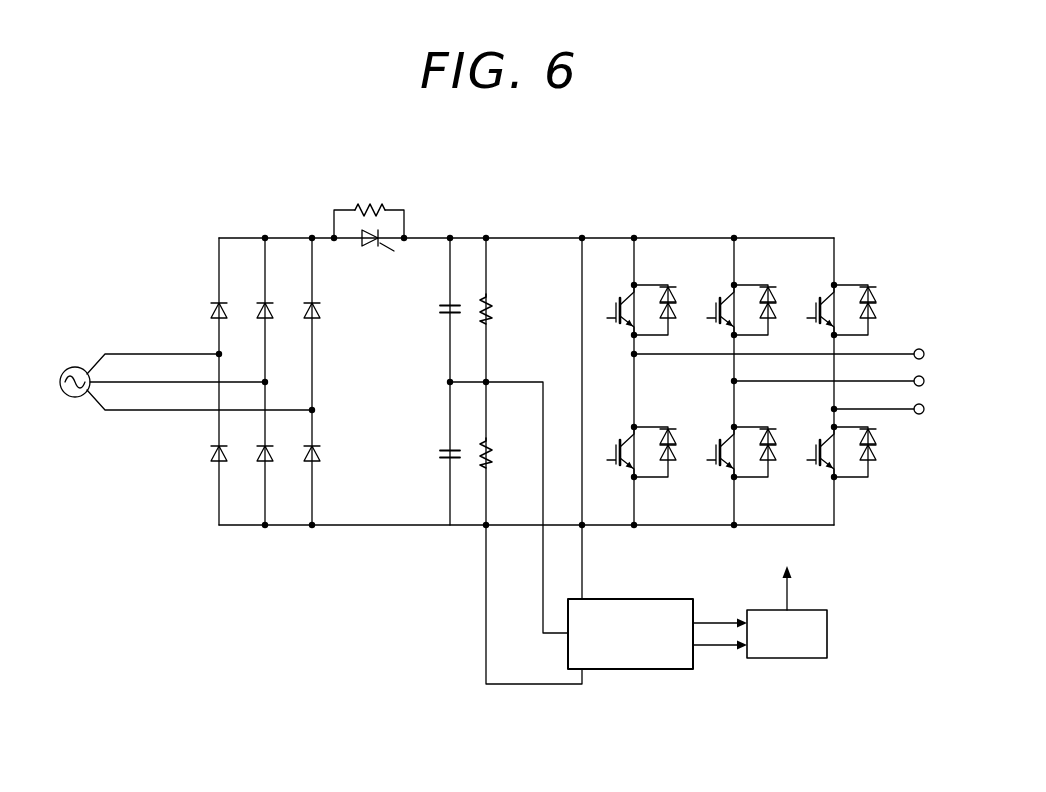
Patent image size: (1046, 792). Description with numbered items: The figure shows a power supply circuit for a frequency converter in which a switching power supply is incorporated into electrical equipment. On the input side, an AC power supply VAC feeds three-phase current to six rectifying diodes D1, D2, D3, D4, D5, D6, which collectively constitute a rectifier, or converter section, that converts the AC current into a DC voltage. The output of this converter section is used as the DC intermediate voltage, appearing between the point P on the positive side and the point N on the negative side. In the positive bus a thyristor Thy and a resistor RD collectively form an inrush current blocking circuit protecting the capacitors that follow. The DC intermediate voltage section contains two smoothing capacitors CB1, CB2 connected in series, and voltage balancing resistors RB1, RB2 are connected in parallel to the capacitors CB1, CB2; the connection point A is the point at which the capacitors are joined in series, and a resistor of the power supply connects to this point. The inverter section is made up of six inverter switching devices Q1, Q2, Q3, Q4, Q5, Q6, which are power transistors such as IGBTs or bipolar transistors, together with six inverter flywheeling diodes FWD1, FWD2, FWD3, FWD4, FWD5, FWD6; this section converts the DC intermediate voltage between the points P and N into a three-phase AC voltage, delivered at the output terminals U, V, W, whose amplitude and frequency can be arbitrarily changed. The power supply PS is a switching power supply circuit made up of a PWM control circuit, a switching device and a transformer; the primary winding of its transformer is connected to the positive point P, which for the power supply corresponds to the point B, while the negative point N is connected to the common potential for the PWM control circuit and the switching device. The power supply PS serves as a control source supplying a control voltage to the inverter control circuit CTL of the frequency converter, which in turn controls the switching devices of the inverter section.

The AC power supply VAC is at (72, 367).
The rectifying diode D1 is at (204, 381).
The rectifying diode D2 is at (250, 381).
The rectifying diode D3 is at (297, 381).
The rectifying diode D4 is at (204, 470).
The rectifying diode D5 is at (250, 470).
The rectifying diode D6 is at (297, 470).
The resistor RD is at (369, 210).
The thyristor Thy is at (368, 252).
The point on the positive side of the DC voltage P is at (428, 237).
The point B is at (487, 237).
The connection point A is at (447, 382).
The point on the negative side N is at (388, 527).
The smoothing capacitor CB1 is at (440, 309).
The smoothing capacitor CB2 is at (440, 454).
The voltage balancing resistor RB1 is at (493, 305).
The voltage balancing resistor RB2 is at (492, 451).
The inverter switching device Q1 is at (633, 381).
The inverter switching device Q2 is at (733, 381).
The inverter switching device Q3 is at (833, 381).
The inverter switching device Q4 is at (633, 450).
The inverter switching device Q5 is at (733, 450).
The inverter switching device Q6 is at (833, 450).
The inverter flywheeling diode FWD1 is at (676, 288).
The inverter flywheeling diode FWD2 is at (776, 288).
The inverter flywheeling diode FWD3 is at (876, 288).
The inverter flywheeling diode FWD4 is at (677, 479).
The inverter flywheeling diode FWD5 is at (777, 479).
The inverter flywheeling diode FWD6 is at (877, 479).
The output terminal U is at (792, 355).
The output terminal V is at (841, 382).
The output terminal W is at (894, 410).
The power supply PS is at (645, 599).
The control circuit CTL is at (828, 626).